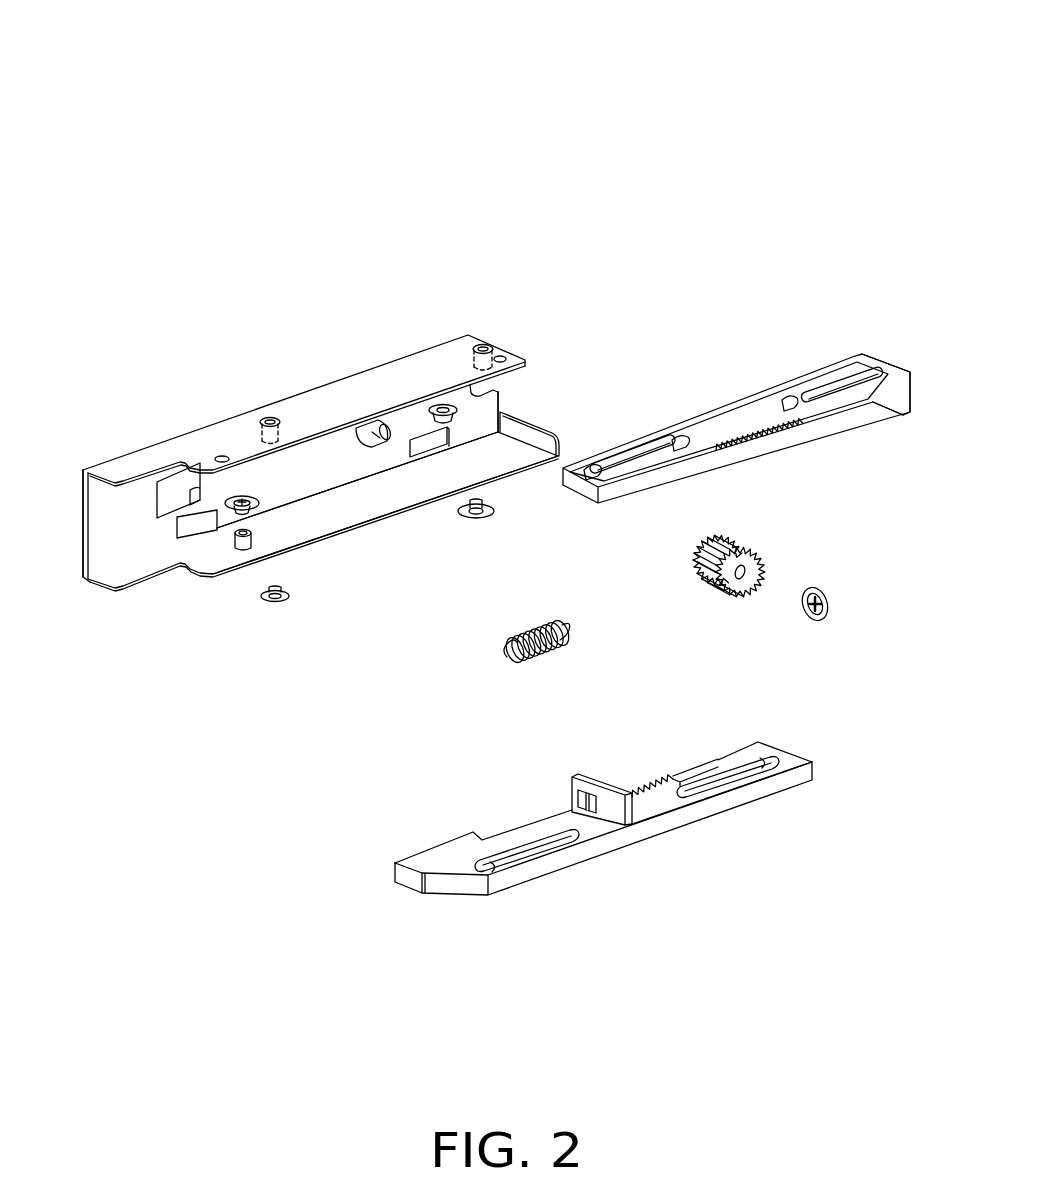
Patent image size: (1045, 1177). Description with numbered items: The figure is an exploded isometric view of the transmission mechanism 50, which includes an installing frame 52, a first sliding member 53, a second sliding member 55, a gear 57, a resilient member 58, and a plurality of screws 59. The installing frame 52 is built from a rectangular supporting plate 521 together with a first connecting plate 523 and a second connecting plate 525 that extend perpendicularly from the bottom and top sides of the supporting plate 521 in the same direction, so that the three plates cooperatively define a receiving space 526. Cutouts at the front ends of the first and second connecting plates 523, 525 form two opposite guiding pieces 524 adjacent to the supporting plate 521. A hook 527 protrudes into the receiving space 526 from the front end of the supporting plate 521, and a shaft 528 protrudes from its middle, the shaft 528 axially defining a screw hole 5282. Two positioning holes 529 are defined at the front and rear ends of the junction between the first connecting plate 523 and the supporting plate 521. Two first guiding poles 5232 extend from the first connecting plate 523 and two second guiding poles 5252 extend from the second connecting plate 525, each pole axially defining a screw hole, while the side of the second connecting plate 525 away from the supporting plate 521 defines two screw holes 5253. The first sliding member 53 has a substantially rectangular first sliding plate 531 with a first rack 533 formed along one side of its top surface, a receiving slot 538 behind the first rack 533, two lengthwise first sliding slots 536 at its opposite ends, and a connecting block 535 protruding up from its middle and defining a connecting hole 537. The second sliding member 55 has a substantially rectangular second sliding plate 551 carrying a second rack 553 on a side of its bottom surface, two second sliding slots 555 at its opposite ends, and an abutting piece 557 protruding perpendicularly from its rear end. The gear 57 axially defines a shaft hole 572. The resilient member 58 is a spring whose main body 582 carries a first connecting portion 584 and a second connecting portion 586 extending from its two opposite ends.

The transmission mechanism 50 is at (485, 42).
The installing frame 52 is at (272, 334).
The supporting plate 521 is at (83, 527).
The first connecting plate 523 is at (348, 538).
The first guiding poles 5232 is at (245, 552).
The guiding pieces 524 is at (118, 465).
The second connecting plate 525 is at (325, 408).
The second guiding poles 5252 is at (482, 347).
The screw holes 5253 is at (223, 456).
The receiving space 526 is at (483, 405).
The hook 527 is at (190, 490).
The shaft 528 is at (383, 428).
The screw hole 5282 is at (387, 446).
The positioning holes 529 is at (191, 537).
The first sliding member 53 is at (727, 827).
The first sliding plate 531 is at (660, 820).
The first rack 533 is at (637, 790).
The connecting block 535 is at (607, 810).
The first sliding slots 536 is at (770, 762).
The connecting hole 537 is at (577, 797).
The receiving slot 538 is at (685, 772).
The second sliding member 55 is at (727, 391).
The second sliding plate 551 is at (839, 409).
The second rack 553 is at (760, 448).
The second sliding slots 555 is at (817, 392).
The abutting piece 557 is at (853, 358).
The gear 57 is at (742, 553).
The shaft hole 572 is at (746, 573).
The resilient member 58 is at (523, 622).
The main body 582 is at (520, 633).
The first connecting portion 584 is at (567, 628).
The second connecting portion 586 is at (507, 657).
The screws 59 is at (826, 609).